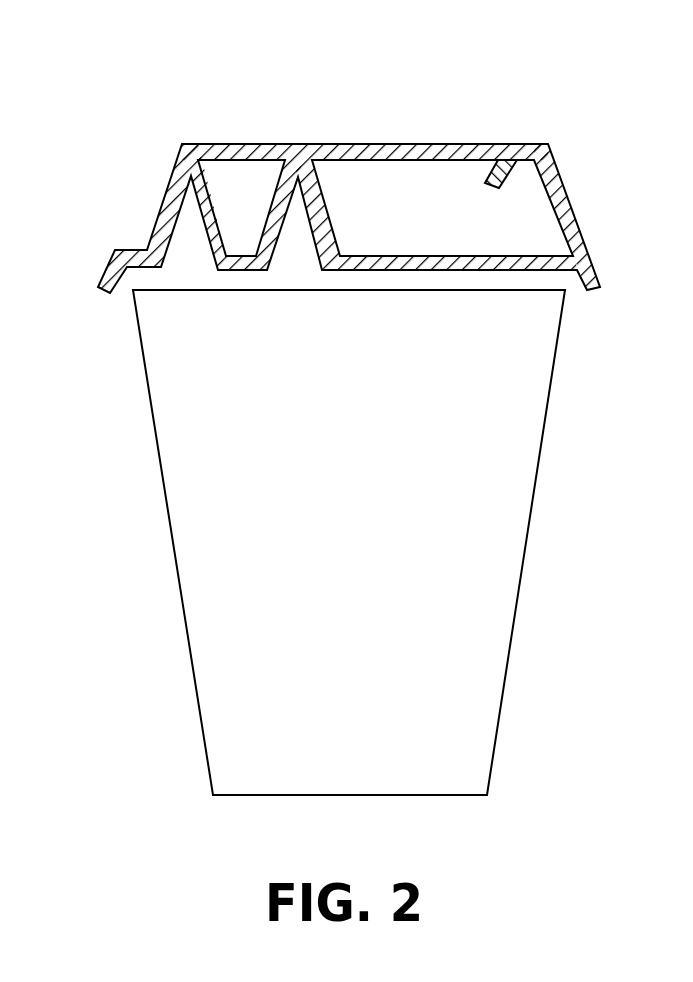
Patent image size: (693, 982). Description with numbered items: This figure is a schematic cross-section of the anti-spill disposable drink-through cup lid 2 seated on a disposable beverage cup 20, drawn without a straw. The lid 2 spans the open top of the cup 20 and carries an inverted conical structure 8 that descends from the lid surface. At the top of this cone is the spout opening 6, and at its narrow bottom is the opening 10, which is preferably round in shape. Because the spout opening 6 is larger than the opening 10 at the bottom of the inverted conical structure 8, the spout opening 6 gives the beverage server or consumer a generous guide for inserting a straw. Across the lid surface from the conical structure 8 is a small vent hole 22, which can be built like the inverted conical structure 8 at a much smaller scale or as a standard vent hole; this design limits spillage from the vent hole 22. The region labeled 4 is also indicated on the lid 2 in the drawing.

The anti-spill disposable drink-through cup lid 2 is at (365, 199).
The annular channel 4 is at (214, 202).
The spout opening 6 is at (277, 103).
The inverted conical structure 8 is at (185, 268).
The opening 10 is at (262, 295).
The disposable beverage cup 20 is at (513, 625).
The small vent hole 22 is at (512, 115).